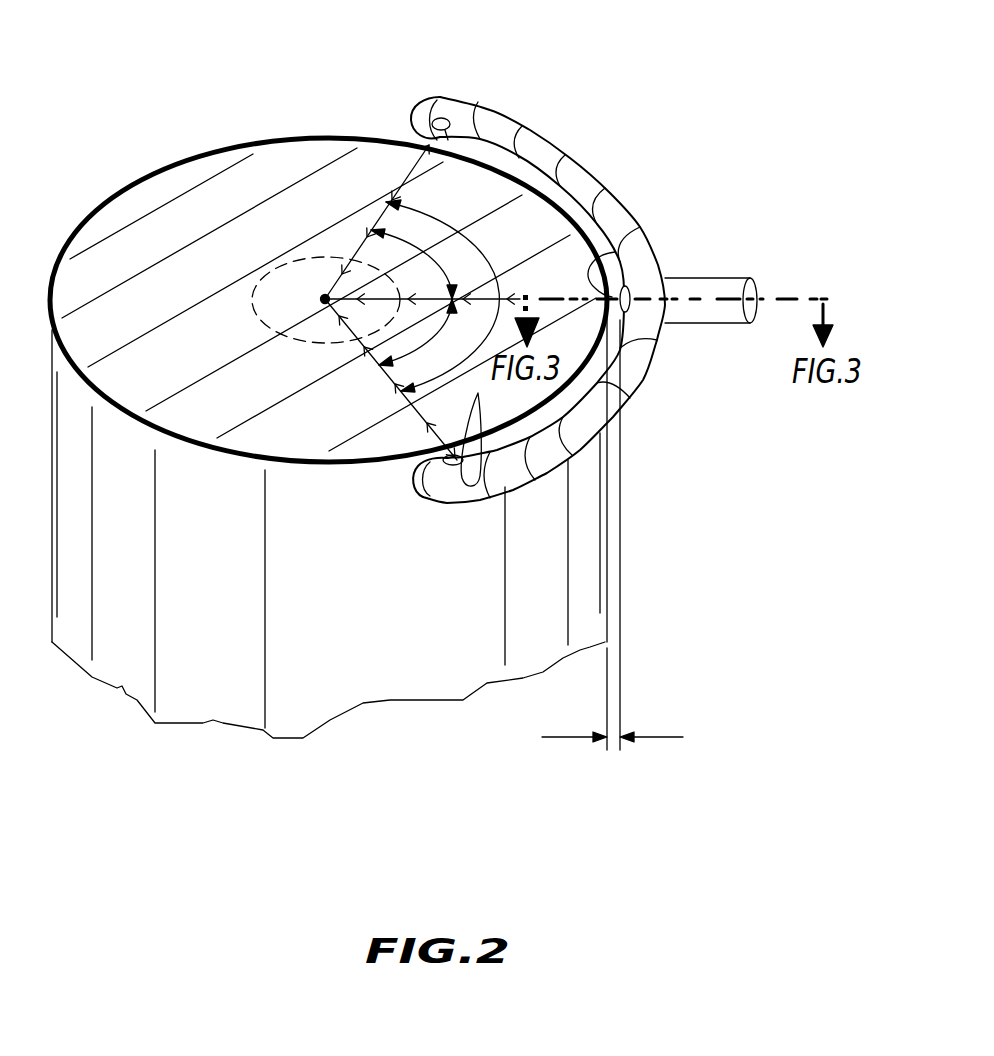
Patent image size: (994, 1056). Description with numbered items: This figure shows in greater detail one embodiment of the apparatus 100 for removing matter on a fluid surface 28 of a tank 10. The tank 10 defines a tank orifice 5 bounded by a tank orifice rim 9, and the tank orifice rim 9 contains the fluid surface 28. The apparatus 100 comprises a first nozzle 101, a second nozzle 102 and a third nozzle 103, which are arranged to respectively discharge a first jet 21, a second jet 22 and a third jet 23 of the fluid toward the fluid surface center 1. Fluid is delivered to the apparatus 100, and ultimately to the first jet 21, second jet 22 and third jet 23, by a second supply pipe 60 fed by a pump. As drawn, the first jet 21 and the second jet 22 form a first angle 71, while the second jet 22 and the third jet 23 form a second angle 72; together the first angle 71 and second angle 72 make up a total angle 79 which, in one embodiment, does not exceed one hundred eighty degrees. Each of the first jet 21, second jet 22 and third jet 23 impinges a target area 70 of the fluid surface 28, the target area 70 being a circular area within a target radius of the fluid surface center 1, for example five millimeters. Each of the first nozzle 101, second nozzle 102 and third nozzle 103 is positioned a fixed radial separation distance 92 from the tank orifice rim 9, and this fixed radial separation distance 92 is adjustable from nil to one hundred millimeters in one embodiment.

The tank orifice 5 is at (320, 97).
The tank orifice rim 9 is at (130, 185).
The tank 10 is at (215, 700).
The fluid surface 28 is at (238, 175).
The fluid surface center 1 is at (322, 298).
The target area 70 is at (262, 325).
The first jet 21 is at (380, 212).
The second jet 22 is at (492, 297).
The third jet 23 is at (372, 350).
The first angle 71 is at (415, 264).
The second angle 72 is at (420, 332).
The total angle 79 is at (442, 296).
The apparatus 100 is at (715, 150).
The first nozzle 101 is at (480, 117).
The second nozzle 102 is at (615, 252).
The third nozzle 103 is at (472, 486).
The second supply pipe 60 is at (723, 318).
The fixed radial separation distance 92 is at (637, 704).